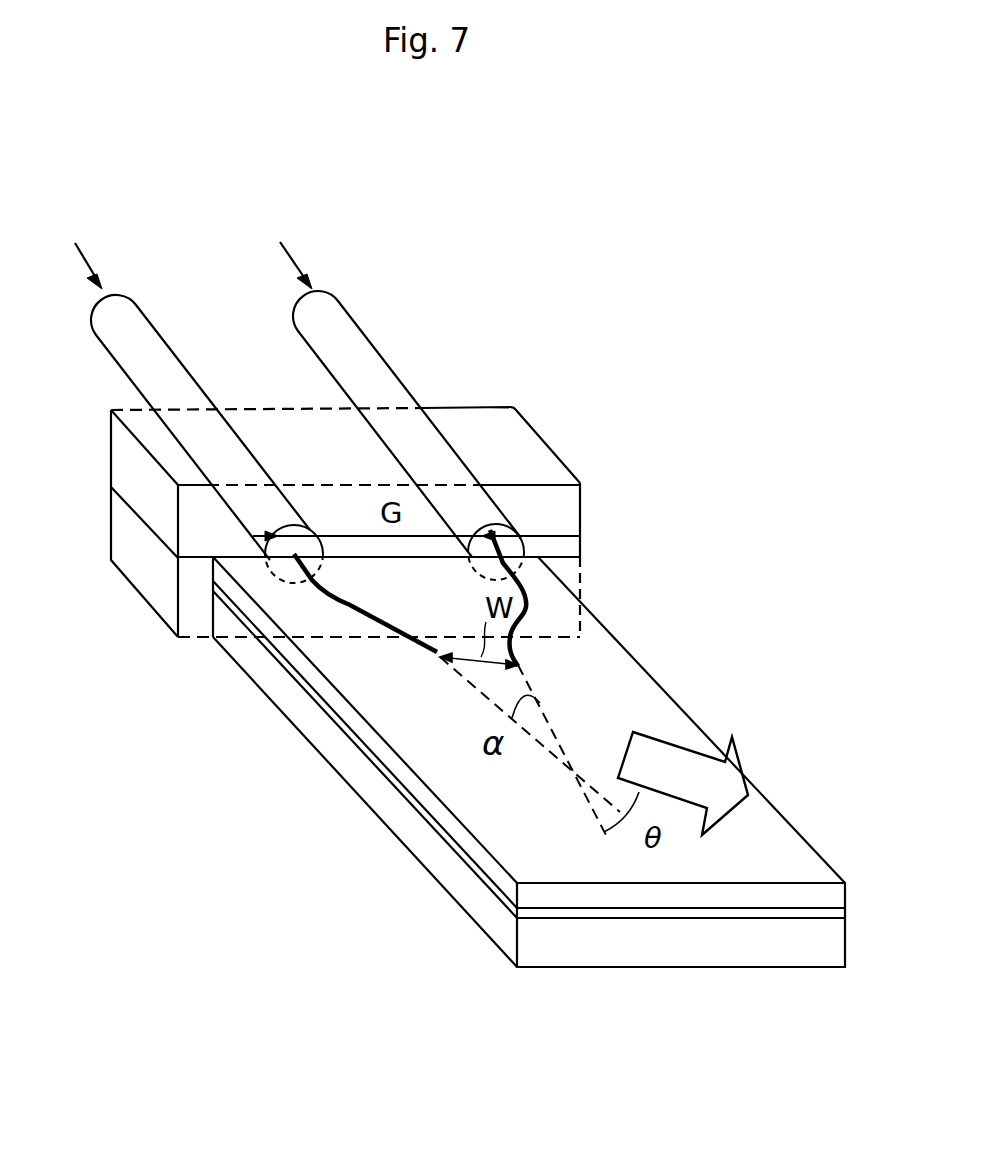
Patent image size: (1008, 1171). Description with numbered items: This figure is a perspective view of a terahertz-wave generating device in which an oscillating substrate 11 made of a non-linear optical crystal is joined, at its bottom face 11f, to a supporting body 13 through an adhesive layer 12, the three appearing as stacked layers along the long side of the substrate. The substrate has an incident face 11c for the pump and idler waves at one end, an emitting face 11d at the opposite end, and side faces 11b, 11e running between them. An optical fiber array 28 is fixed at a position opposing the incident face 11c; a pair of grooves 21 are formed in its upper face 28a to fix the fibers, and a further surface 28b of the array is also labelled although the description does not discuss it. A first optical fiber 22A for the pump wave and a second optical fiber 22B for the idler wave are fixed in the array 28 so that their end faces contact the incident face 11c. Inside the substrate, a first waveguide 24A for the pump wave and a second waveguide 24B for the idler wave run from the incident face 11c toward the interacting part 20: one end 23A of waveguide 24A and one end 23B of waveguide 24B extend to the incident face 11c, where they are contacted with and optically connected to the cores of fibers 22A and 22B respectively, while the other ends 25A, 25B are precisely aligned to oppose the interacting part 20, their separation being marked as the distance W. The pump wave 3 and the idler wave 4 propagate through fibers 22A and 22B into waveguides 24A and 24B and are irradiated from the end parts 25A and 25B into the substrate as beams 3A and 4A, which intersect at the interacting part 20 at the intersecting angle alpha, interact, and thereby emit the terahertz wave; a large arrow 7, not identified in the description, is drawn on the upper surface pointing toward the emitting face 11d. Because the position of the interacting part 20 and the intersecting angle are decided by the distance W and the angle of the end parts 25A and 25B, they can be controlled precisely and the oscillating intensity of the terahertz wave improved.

The pump wave 3 is at (288, 253).
The idler wave 4 is at (82, 253).
The scanning direction arrow 7 is at (727, 768).
The oscillating substrate 11 is at (637, 658).
The side face 11b is at (667, 687).
The incident face 11c is at (212, 583).
The emitting face 11d is at (817, 887).
The side face 11e is at (300, 665).
The bottom face 11f is at (415, 807).
The adhesive layer 12 is at (358, 733).
The supporting body 13 is at (242, 652).
The interacting part 20 is at (572, 770).
The grooves 21 is at (240, 423).
The first optical fiber 22A is at (375, 367).
The second optical fiber 22B is at (160, 355).
The one end of the first waveguide 23A is at (511, 546).
The one end of the second waveguide 23B is at (299, 557).
The first waveguide 24A is at (527, 594).
The second waveguide 24B is at (350, 606).
The other end of the first waveguide 25A is at (520, 663).
The other end of the second waveguide 25B is at (440, 644).
The optical fiber array 28 is at (548, 424).
The upper face of the optical fiber array 28a is at (557, 457).
The front surface of holder block 28b is at (582, 490).
The pump wave irradiated into the substrate 3A is at (553, 733).
The idler wave irradiated into the substrate 4A is at (473, 683).